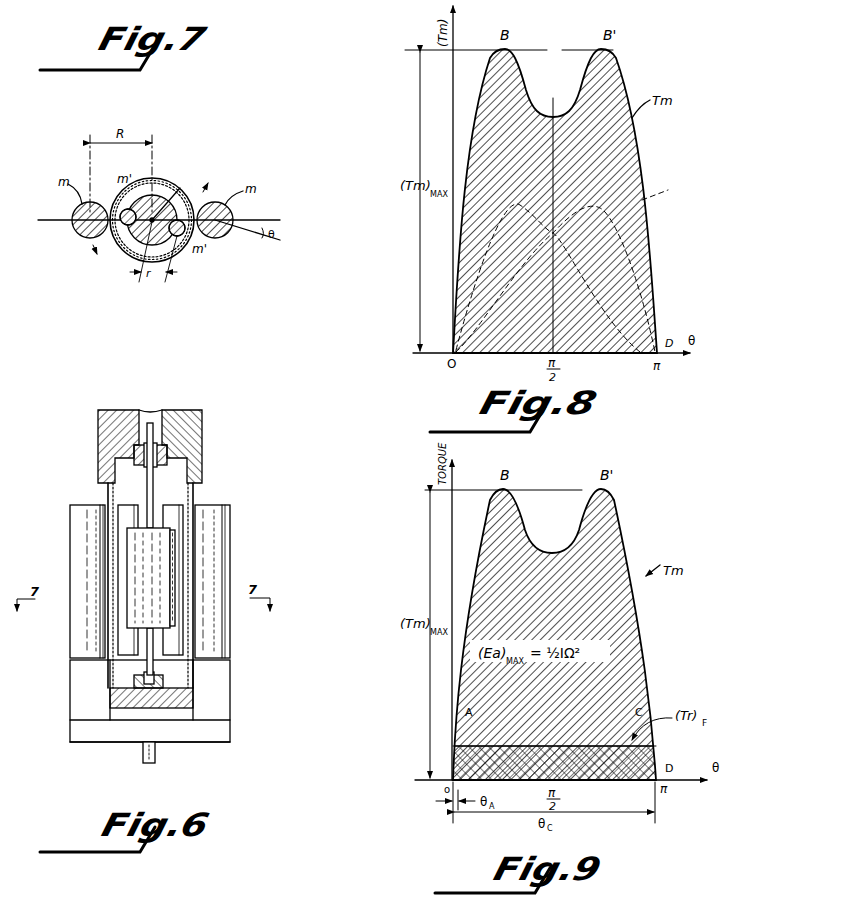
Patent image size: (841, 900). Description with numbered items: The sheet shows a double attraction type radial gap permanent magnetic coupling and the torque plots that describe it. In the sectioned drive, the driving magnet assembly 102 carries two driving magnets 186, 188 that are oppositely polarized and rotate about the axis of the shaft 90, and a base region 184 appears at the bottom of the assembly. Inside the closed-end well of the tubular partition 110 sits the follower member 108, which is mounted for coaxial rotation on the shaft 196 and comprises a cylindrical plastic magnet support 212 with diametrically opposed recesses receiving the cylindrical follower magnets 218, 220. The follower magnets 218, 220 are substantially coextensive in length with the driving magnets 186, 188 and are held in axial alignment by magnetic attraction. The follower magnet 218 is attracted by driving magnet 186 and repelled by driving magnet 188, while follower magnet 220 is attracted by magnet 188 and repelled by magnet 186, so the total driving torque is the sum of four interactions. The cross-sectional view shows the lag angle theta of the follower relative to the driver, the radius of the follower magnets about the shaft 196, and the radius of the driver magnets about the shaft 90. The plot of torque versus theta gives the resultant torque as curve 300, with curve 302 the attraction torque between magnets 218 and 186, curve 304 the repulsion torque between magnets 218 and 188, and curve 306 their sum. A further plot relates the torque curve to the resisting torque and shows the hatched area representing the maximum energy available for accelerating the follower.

In FIG. 7, the shaft 196 is at (180, 188).
In FIG. 6, the shaft 196 is at (150, 423).
In FIG. 7, the driving magnet 188 is at (78, 232).
In FIG. 6, the driving magnet 188 is at (72, 622).
In FIG. 7, the driving magnet 186 is at (228, 234).
In FIG. 6, the driving magnet 186 is at (230, 632).
In FIG. 7, the follower magnet 220 is at (122, 236).
In FIG. 6, the follower magnet 220 is at (118, 556).
In FIG. 7, the follower magnet 218 is at (177, 238).
In FIG. 6, the follower magnet 218 is at (178, 566).
In FIG. 7, the tubular partition 110 is at (140, 254).
In FIG. 6, the tubular partition 110 is at (194, 493).
In FIG. 6, the plastic magnet support 212 is at (168, 548).
In FIG. 6, the follower member 108 is at (113, 668).
In FIG. 6, the driving magnet assembly 102 is at (233, 718).
In FIG. 6, the base plate 184 is at (95, 742).
In FIG. 6, the shaft 90 is at (156, 752).
In FIG. 8, the curve 300 is at (642, 148).
In FIG. 8, the curve 302 is at (522, 270).
In FIG. 8, the curve 304 is at (584, 270).
In FIG. 8, the curve 306 is at (669, 189).